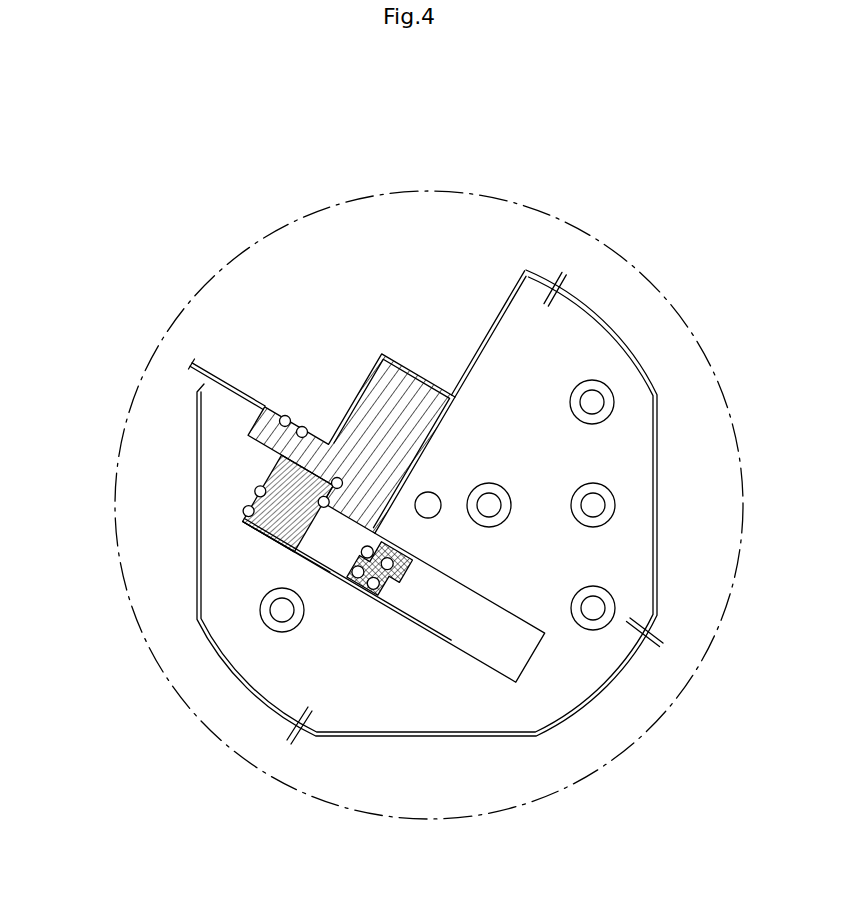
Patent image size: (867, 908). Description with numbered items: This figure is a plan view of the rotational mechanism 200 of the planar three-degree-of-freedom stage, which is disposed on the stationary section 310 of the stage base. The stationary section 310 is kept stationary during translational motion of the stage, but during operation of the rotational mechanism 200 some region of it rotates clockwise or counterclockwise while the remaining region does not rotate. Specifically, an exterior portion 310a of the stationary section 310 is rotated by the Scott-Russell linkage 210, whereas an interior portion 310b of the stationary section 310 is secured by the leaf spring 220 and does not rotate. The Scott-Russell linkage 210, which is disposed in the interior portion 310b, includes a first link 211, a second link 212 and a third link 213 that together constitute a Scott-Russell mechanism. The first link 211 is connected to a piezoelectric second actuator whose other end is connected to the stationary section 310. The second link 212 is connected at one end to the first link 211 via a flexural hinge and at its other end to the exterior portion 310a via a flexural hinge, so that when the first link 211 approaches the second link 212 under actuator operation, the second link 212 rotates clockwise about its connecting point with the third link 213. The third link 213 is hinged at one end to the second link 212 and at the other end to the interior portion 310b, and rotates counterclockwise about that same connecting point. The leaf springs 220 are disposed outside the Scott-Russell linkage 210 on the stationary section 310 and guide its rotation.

The rotational mechanism 200 is at (688, 167).
The leaf spring 220 is at (555, 280).
The Scott-Russell linkage 210 is at (362, 610).
The first link 211 is at (397, 582).
The second link 212 is at (330, 548).
The third link 213 is at (272, 515).
The stationary section 310 is at (376, 305).
The exterior portion 310a is at (385, 272).
The interior portion 310b is at (510, 368).